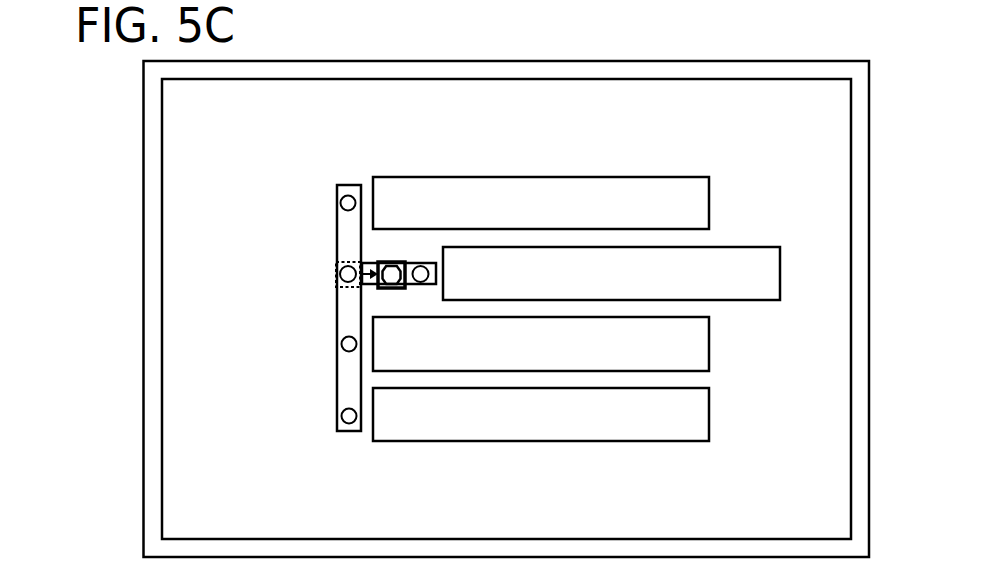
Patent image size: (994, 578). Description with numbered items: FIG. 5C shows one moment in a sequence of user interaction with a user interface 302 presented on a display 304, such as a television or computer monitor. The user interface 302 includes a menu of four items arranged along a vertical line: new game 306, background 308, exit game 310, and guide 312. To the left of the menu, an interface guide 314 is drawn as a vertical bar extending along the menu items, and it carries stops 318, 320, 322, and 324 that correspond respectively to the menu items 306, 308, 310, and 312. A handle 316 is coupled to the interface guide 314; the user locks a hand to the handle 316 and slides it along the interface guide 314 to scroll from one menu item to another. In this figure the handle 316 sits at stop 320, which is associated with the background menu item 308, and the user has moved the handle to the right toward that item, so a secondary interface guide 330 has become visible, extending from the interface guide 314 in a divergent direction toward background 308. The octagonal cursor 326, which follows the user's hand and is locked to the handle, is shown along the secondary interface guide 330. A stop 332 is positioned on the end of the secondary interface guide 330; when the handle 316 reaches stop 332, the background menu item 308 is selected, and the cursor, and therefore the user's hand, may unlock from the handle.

The user interface 302 is at (812, 134).
The display 304 is at (710, 61).
The new game 306 is at (688, 214).
The background 308 is at (758, 284).
The exit game 310 is at (688, 356).
The guide 312 is at (688, 426).
The interface guide 314 is at (350, 432).
The handle 316 is at (360, 262).
The stop 318 is at (344, 187).
The stop 320 is at (350, 285).
The stop 322 is at (350, 352).
The stop 324 is at (348, 424).
The cursor 326 is at (378, 263).
The secondary interface guide 330 is at (422, 285).
The stop 332 is at (421, 266).